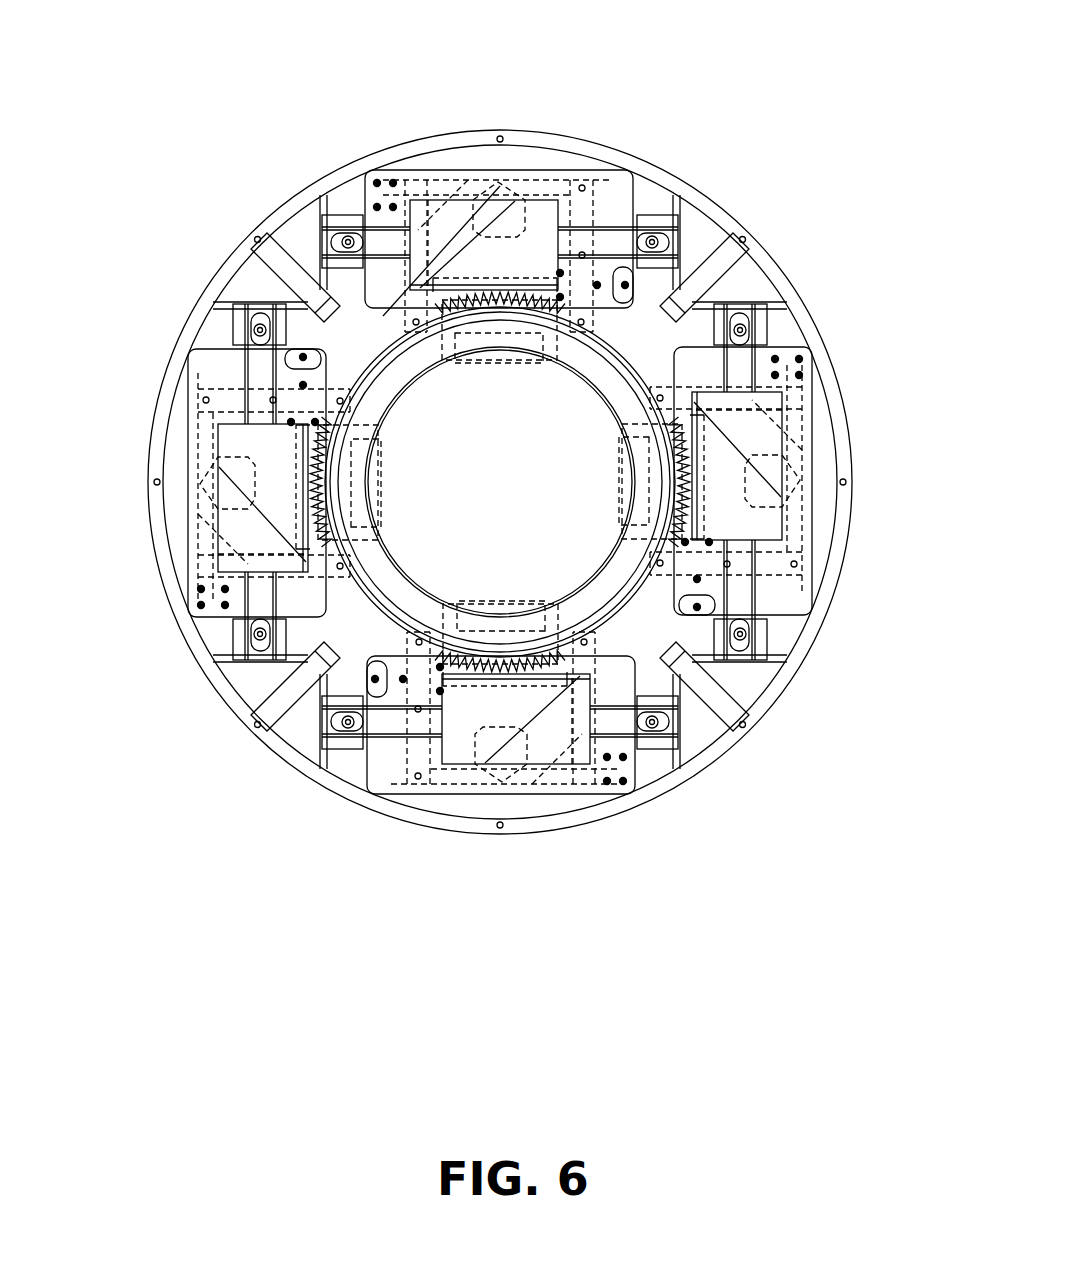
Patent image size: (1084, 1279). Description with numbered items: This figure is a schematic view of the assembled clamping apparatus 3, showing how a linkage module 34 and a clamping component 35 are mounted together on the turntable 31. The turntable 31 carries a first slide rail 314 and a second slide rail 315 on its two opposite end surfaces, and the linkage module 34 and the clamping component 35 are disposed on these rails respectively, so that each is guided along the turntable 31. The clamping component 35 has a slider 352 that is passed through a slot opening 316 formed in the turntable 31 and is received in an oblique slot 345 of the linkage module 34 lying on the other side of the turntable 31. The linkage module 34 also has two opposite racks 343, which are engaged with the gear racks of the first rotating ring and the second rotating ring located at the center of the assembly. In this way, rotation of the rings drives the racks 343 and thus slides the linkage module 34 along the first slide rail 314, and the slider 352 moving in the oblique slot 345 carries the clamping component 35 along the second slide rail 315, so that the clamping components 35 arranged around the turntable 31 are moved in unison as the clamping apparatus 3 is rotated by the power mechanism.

The clamping apparatus 3 is at (248, 214).
The turntable 31 is at (790, 302).
The first slide rail 314 is at (428, 185).
The second slide rail 315 is at (402, 182).
The slot opening 316 is at (615, 288).
The linkage module 34 is at (543, 229).
The rack 343 is at (305, 485).
The oblique slot 345 is at (480, 182).
The clamping component 35 is at (380, 180).
The slider 352 is at (500, 186).